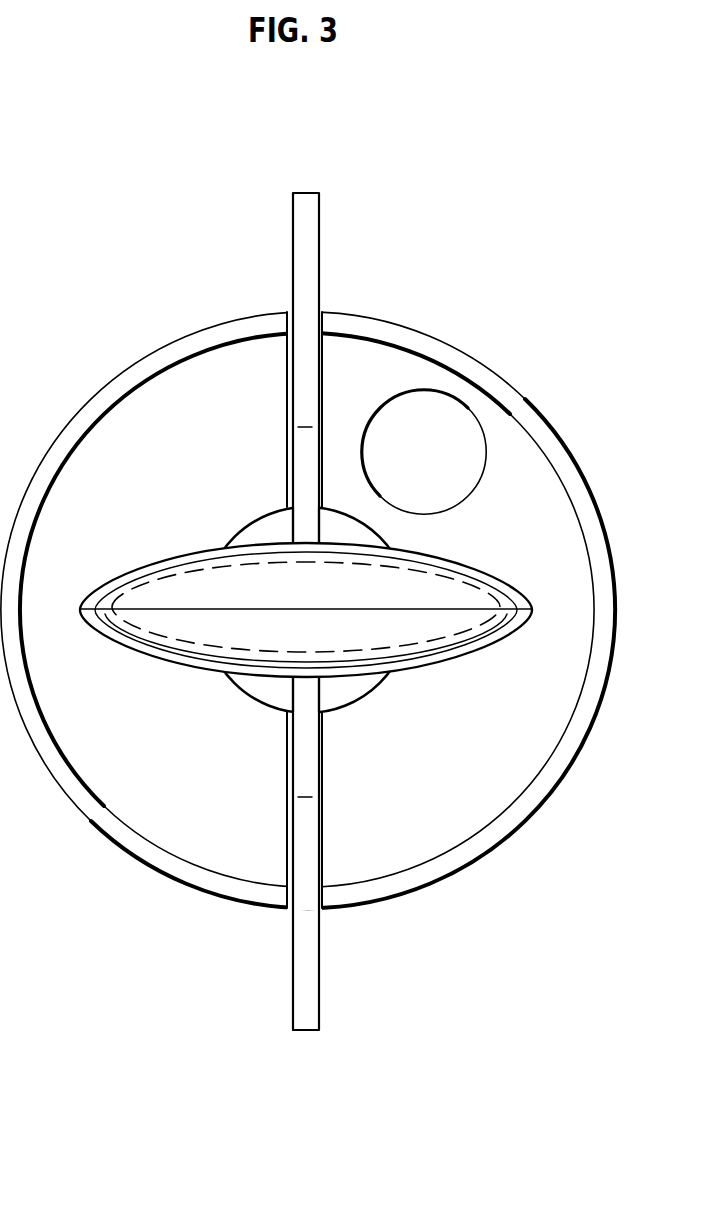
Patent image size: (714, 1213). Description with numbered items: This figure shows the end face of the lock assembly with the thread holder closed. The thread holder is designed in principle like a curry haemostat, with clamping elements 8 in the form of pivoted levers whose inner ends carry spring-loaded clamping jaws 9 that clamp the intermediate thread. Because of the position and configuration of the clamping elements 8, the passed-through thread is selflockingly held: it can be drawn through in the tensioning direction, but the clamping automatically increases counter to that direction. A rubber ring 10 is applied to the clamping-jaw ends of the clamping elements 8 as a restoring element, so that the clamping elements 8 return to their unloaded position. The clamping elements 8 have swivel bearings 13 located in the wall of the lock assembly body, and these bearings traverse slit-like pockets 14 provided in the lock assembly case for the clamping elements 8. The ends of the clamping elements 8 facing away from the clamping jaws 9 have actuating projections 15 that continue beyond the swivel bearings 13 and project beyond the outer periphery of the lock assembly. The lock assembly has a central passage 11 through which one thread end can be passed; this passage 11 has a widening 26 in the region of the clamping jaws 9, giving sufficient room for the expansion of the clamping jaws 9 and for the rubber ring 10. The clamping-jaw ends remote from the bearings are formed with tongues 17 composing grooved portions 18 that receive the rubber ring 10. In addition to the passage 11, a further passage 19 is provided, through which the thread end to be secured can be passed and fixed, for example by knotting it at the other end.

The clamping elements 8 is at (341, 273).
The clamping jaws 9 is at (445, 588).
The rubber ring 10 is at (203, 553).
The central passage 11 is at (340, 700).
The swivel bearings 13 is at (290, 401).
The slit-like pockets 14 is at (313, 495).
The actuating projections 15 is at (303, 212).
The tongues 17 is at (152, 588).
The grooved portions 18 is at (465, 632).
The further passage 19 is at (442, 402).
The widening 26 is at (187, 858).